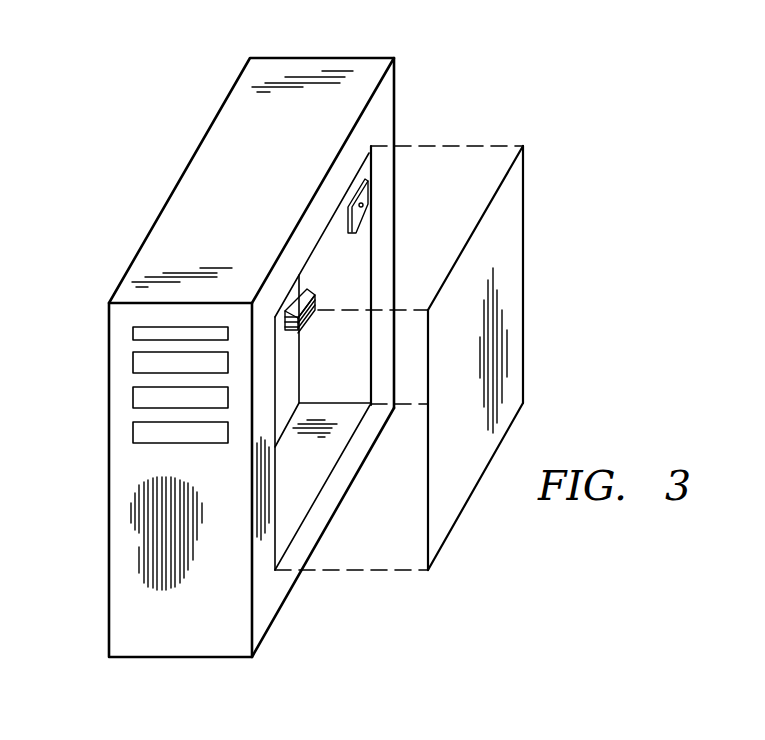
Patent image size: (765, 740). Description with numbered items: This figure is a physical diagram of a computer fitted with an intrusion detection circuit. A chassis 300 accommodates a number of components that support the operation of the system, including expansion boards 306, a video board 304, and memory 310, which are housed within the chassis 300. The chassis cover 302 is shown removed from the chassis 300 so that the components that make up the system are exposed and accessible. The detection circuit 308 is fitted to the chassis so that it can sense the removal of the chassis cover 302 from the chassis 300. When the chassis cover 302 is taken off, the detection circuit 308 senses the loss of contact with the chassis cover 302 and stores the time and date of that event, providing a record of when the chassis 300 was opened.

The chassis 300 is at (318, 58).
The chassis cover 302 is at (525, 295).
The video board 304 is at (133, 333).
The expansion boards 306 is at (133, 365).
The detection circuit 308 is at (371, 192).
The memory 310 is at (307, 318).